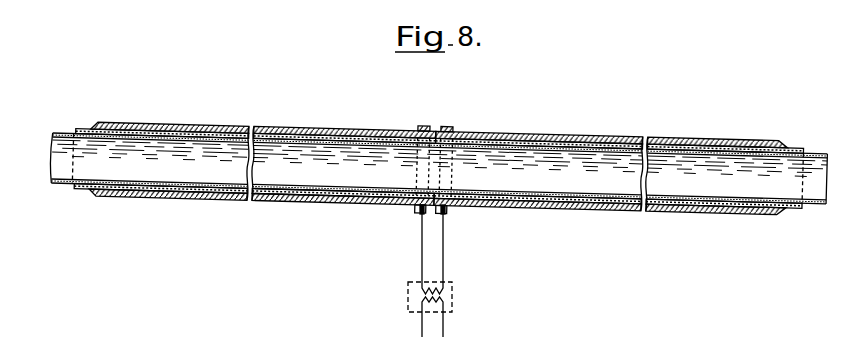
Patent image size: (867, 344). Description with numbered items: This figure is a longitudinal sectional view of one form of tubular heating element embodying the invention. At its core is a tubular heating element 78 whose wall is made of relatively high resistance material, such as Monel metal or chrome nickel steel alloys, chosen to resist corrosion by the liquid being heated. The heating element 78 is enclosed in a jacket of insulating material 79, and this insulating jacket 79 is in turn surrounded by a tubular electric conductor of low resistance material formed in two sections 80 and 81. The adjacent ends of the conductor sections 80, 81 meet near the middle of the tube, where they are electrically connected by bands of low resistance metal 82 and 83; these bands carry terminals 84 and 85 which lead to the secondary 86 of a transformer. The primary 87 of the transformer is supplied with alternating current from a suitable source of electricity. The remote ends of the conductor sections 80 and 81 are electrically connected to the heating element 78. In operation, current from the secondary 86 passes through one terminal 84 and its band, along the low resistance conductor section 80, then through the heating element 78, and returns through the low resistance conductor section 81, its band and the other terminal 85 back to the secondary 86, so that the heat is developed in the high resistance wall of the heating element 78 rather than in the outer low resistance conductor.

The tubular heating element 78 is at (52, 184).
The insulating jacket 79 is at (152, 191).
The conductor section 80 is at (277, 199).
The conductor section 81 is at (606, 209).
The band of low resistance metal 82 is at (415, 208).
The band of low resistance metal 83 is at (450, 210).
The terminal 84 is at (422, 214).
The terminal 85 is at (443, 214).
The secondary 86 is at (444, 289).
The primary 87 is at (445, 307).